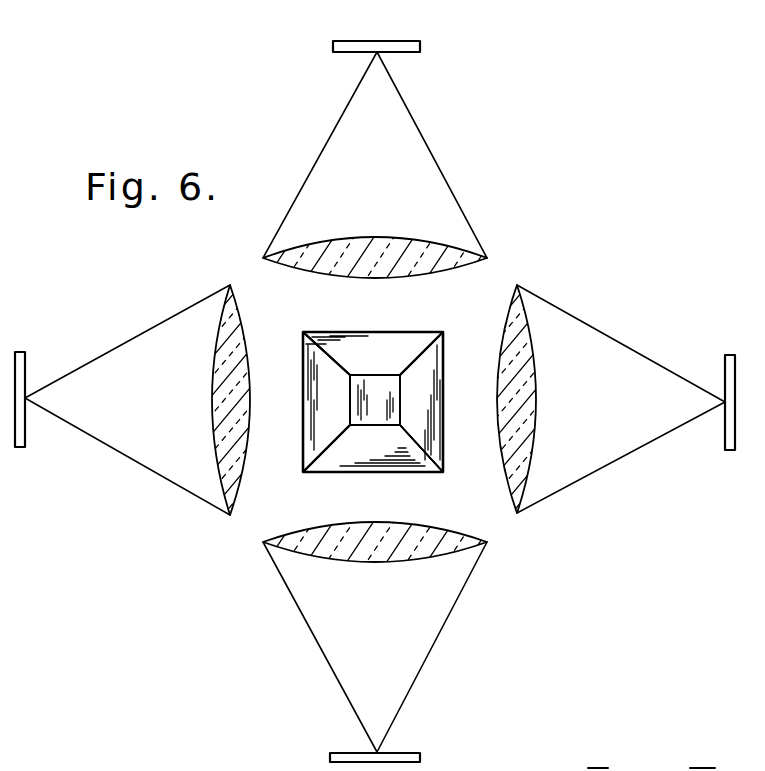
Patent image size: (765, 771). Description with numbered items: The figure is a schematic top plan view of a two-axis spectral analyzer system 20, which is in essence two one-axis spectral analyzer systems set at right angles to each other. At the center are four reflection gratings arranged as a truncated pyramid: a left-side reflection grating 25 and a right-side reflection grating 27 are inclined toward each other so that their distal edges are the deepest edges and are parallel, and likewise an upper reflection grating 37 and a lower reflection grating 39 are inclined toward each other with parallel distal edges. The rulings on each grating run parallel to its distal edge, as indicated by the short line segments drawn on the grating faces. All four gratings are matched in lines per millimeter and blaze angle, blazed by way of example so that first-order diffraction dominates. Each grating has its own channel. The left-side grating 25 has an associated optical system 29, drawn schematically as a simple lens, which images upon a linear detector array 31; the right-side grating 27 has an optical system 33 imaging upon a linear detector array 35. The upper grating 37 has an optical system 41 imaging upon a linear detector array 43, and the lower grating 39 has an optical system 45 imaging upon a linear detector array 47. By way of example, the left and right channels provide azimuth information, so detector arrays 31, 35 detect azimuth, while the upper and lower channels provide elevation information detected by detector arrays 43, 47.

The two-axis spectral analyzer system 20 is at (442, 495).
The left-side reflection grating 25 is at (312, 385).
The right-side reflection grating 27 is at (440, 393).
The upper reflection grating 37 is at (340, 335).
The lower reflection grating 39 is at (362, 460).
The optical system 29 is at (240, 483).
The optical system 33 is at (528, 487).
The optical system 41 is at (470, 257).
The optical system 45 is at (460, 550).
The linear detector array 31 is at (25, 352).
The linear detector array 35 is at (730, 355).
The linear detector array 43 is at (420, 47).
The linear detector array 47 is at (420, 755).